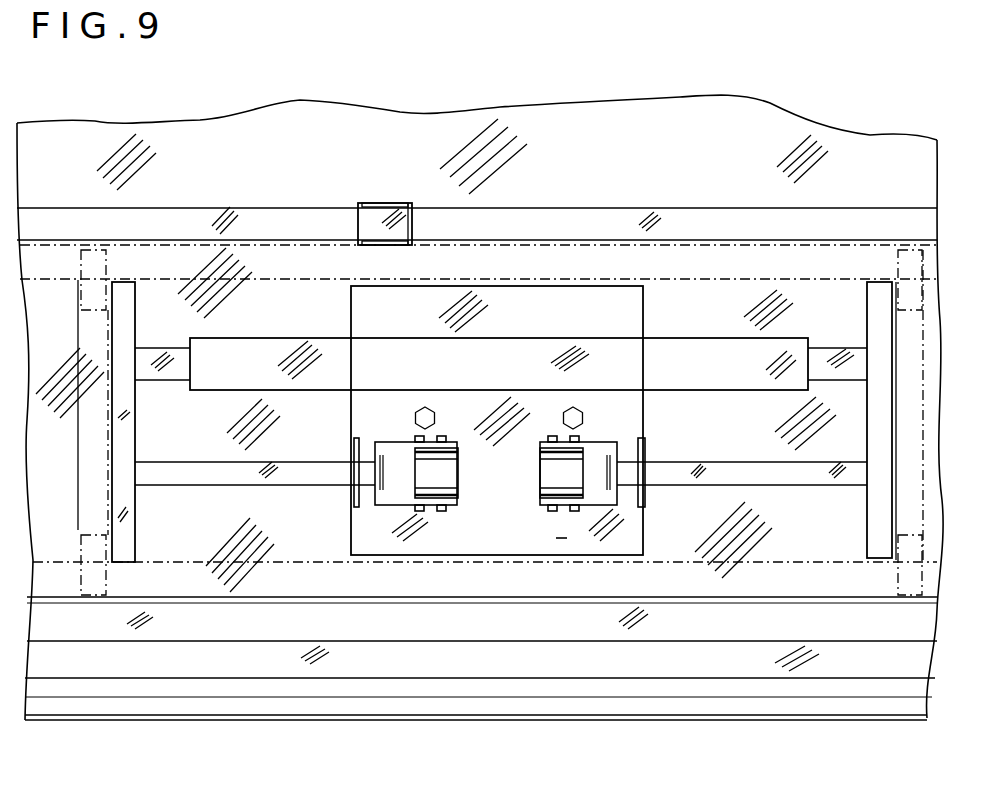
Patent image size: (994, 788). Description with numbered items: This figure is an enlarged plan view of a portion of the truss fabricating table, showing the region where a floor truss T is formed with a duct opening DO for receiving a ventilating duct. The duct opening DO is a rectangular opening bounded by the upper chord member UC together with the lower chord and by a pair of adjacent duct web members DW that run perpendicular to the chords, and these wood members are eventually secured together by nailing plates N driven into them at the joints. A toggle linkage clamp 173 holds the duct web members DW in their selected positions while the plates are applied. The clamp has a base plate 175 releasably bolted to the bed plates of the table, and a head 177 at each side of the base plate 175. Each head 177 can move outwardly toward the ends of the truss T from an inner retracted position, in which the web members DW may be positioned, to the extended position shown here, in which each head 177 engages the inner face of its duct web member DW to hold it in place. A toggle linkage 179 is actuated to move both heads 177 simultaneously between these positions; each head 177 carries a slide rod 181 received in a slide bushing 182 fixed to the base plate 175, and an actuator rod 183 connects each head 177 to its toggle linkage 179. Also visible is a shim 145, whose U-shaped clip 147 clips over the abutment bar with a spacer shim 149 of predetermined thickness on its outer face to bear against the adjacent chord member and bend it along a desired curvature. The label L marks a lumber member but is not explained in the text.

The shim 145 is at (416, 204).
The U-shaped clip 147 is at (413, 223).
The spacer shim 149 is at (377, 203).
The toggle linkage clamp 173 is at (483, 523).
The base plate 175 is at (562, 540).
The head 177 is at (140, 518).
The toggle linkage 179 is at (390, 442).
The slide rod 181 is at (170, 346).
The slide bushing 182 is at (567, 338).
The actuator rod 183 is at (287, 486).
The nailing plate N is at (107, 262).
The truss T is at (262, 236).
The lumber L is at (500, 272).
The duct opening DO is at (740, 280).
The duct web member DW is at (910, 488).
The upper chord member UC is at (655, 592).